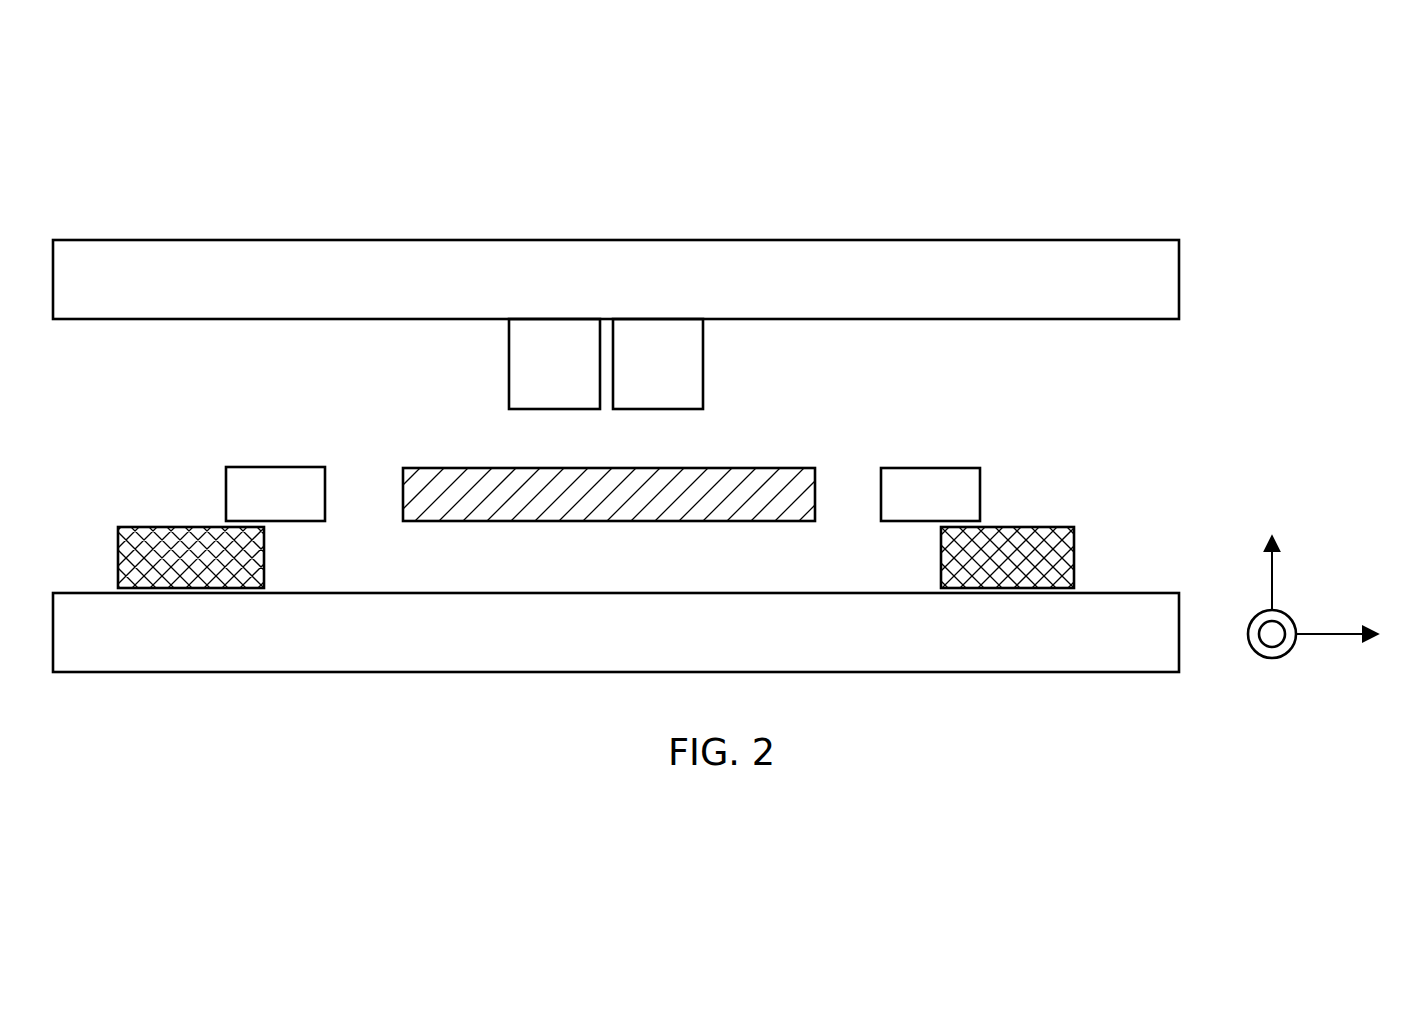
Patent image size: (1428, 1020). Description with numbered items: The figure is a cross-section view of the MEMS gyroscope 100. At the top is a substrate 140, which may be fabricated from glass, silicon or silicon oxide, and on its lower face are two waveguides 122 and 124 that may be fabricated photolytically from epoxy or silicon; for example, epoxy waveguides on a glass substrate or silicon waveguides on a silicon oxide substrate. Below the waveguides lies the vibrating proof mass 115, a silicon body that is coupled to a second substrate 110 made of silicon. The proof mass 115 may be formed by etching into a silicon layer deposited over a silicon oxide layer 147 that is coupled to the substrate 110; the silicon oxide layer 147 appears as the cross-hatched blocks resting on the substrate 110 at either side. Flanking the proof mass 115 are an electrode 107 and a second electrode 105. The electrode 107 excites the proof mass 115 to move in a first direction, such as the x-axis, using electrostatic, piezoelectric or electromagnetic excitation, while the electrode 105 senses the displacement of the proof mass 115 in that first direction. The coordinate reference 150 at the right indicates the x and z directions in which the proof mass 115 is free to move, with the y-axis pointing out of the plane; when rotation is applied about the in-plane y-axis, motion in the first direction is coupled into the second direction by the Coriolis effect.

The MEMS gyroscope 100 is at (1250, 158).
The substrate 140 is at (858, 240).
The second substrate 110 is at (846, 593).
The waveguide 122 is at (509, 362).
The waveguide 124 is at (703, 362).
The vibrating proof mass 115 is at (768, 468).
The electrode 107 is at (226, 497).
The second electrode 105 is at (980, 493).
The silicon oxide layer 147 is at (118, 557).
The coordinate reference 150 is at (1318, 560).